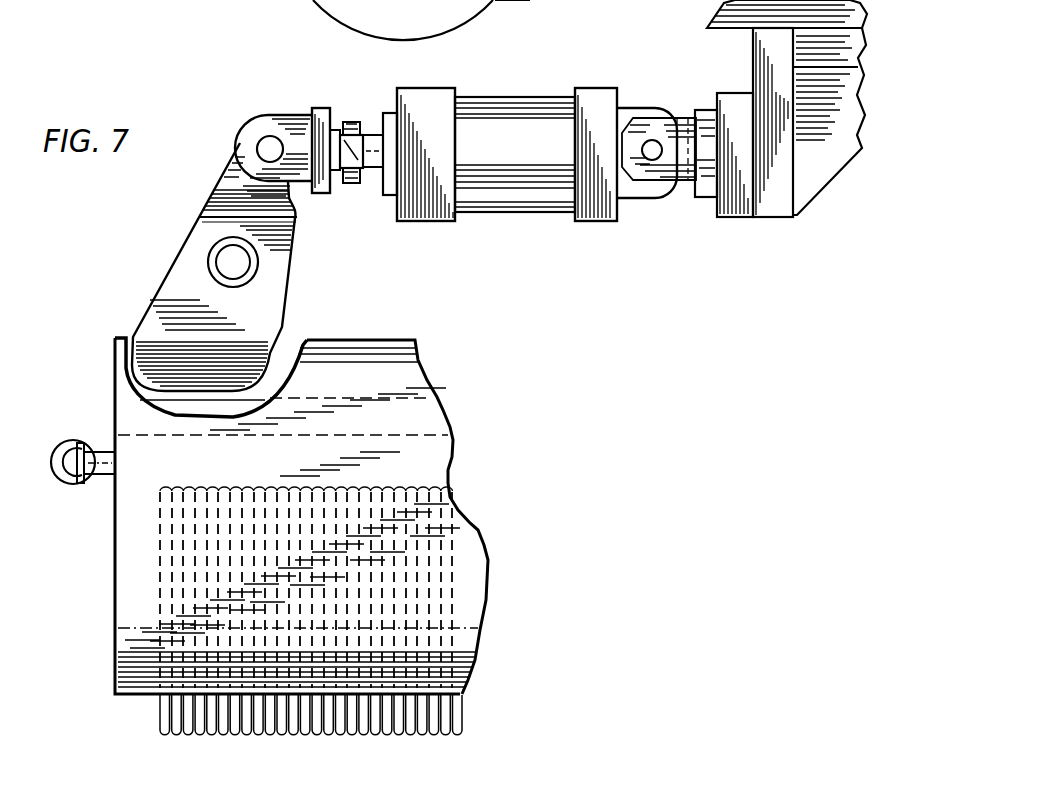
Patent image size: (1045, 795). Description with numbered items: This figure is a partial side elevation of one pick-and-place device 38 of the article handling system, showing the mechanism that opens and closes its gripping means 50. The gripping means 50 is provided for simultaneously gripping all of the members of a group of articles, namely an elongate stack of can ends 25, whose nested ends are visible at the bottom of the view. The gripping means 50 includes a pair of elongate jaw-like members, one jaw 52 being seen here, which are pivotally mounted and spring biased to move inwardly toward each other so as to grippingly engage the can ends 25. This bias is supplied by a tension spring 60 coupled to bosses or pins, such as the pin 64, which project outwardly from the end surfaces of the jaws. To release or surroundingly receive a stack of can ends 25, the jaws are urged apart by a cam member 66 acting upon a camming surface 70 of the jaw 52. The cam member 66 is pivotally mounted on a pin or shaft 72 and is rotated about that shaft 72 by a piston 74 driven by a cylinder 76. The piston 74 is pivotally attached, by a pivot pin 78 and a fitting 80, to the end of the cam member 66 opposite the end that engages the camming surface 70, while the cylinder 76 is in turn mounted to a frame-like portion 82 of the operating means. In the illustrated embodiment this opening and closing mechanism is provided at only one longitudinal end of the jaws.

The stack of can ends 25 is at (460, 705).
The pick-and-place device 38 is at (472, 359).
The gripping means 50 is at (108, 573).
The jaw 52 is at (366, 477).
The tension spring 60 is at (76, 440).
The pin 64 is at (88, 485).
The cam member 66 is at (290, 282).
The camming surface 70 is at (260, 398).
The shaft 72 is at (228, 260).
The piston 74 is at (375, 133).
The cylinder 76 is at (515, 150).
The pivot pin 78 is at (262, 145).
The fitting 80 is at (313, 193).
The frame portion 82 is at (776, 218).